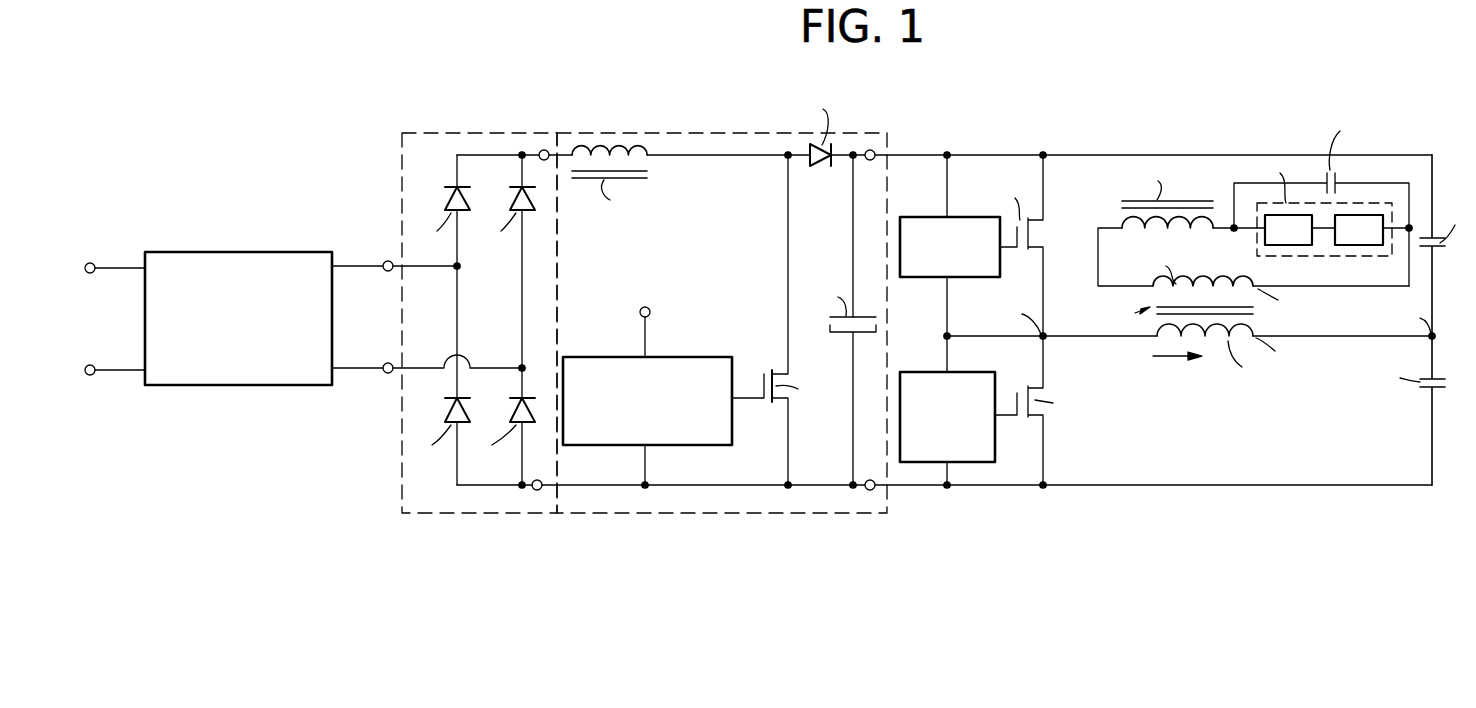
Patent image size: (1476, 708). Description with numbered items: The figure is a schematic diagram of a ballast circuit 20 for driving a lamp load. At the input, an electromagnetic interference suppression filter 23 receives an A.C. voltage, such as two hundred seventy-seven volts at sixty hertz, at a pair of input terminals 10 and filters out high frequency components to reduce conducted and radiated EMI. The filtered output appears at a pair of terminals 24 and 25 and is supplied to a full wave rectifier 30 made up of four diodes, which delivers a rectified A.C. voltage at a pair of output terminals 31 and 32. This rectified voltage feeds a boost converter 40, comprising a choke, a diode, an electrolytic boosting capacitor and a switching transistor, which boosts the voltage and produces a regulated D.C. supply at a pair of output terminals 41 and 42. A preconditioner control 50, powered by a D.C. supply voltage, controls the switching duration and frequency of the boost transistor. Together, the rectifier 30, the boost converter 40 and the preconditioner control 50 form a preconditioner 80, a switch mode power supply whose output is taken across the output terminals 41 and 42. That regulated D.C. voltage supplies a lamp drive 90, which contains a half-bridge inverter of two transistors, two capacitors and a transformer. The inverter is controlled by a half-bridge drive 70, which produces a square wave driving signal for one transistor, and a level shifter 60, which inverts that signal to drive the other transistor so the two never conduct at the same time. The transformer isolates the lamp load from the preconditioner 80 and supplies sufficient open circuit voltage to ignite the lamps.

The input terminals 10 is at (92, 263).
The ballast circuit 20 is at (208, 157).
The electromagnetic interference suppression filter 23 is at (272, 262).
The terminal 24 is at (388, 260).
The terminal 25 is at (388, 362).
The full wave rectifier 30 is at (528, 514).
The output terminal 31 is at (544, 150).
The output terminal 32 is at (543, 483).
The boost converter 40 is at (722, 334).
The output terminal 41 is at (877, 151).
The output terminal 42 is at (875, 490).
The preconditioner control 50 is at (688, 357).
The level shifter 60 is at (928, 217).
The half-bridge drive 70 is at (920, 376).
The preconditioner 80 is at (886, 623).
The lamp drive 90 is at (1184, 403).